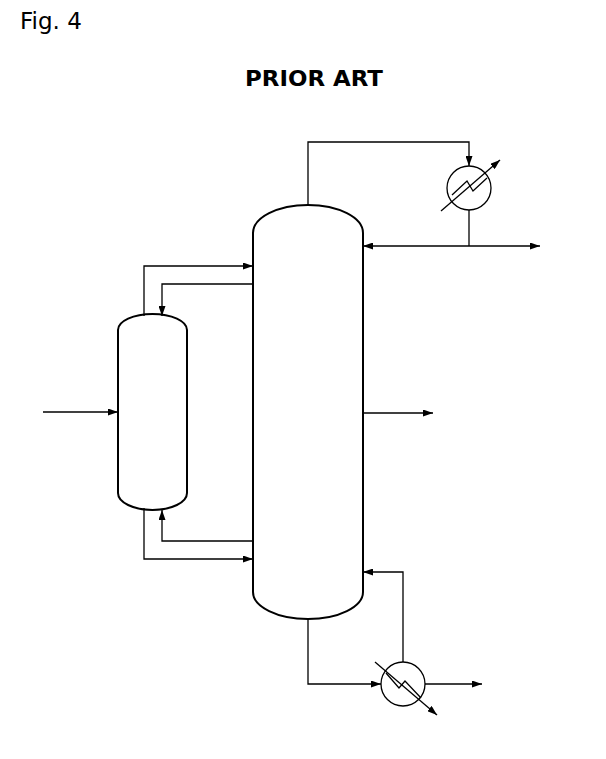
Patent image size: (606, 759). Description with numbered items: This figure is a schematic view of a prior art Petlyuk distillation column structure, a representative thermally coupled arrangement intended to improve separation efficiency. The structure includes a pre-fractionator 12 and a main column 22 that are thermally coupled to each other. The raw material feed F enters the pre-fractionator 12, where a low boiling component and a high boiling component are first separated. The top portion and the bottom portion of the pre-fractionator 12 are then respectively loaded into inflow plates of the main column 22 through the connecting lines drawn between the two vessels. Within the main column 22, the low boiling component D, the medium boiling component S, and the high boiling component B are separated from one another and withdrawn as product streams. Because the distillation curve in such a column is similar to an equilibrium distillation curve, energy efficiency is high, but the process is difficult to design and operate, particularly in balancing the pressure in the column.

The pre-fractionator 12 is at (112, 370).
The main column 22 is at (358, 353).
The raw material (feed) F is at (71, 414).
The low boiling component D is at (463, 249).
The medium boiling component S is at (409, 415).
The high boiling component B is at (465, 686).